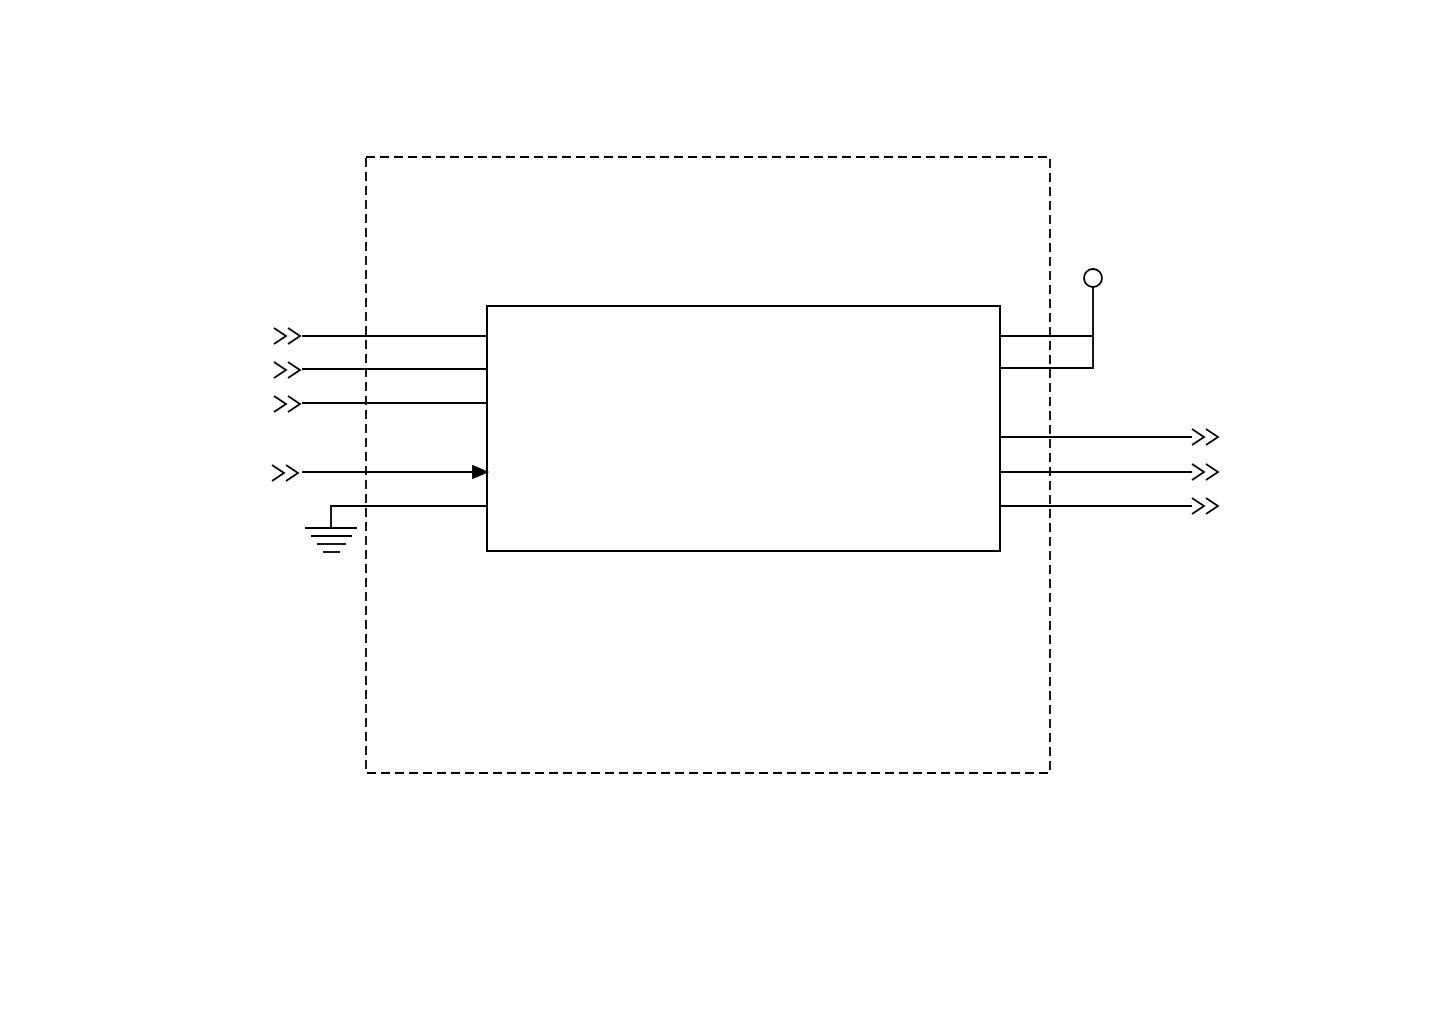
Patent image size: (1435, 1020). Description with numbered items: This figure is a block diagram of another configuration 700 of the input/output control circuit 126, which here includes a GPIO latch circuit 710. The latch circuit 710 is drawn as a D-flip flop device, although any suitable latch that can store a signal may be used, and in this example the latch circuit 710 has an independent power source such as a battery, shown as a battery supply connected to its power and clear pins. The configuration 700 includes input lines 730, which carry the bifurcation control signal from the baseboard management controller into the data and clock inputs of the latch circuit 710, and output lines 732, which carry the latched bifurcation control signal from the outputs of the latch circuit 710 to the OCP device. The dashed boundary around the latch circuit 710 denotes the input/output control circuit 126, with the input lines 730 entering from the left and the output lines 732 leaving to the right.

The configuration 700 is at (388, 76).
The input/output control circuit 126 is at (580, 157).
The GPIO latch circuit 710 is at (744, 552).
The input lines 730 is at (322, 403).
The output lines 732 is at (1157, 437).